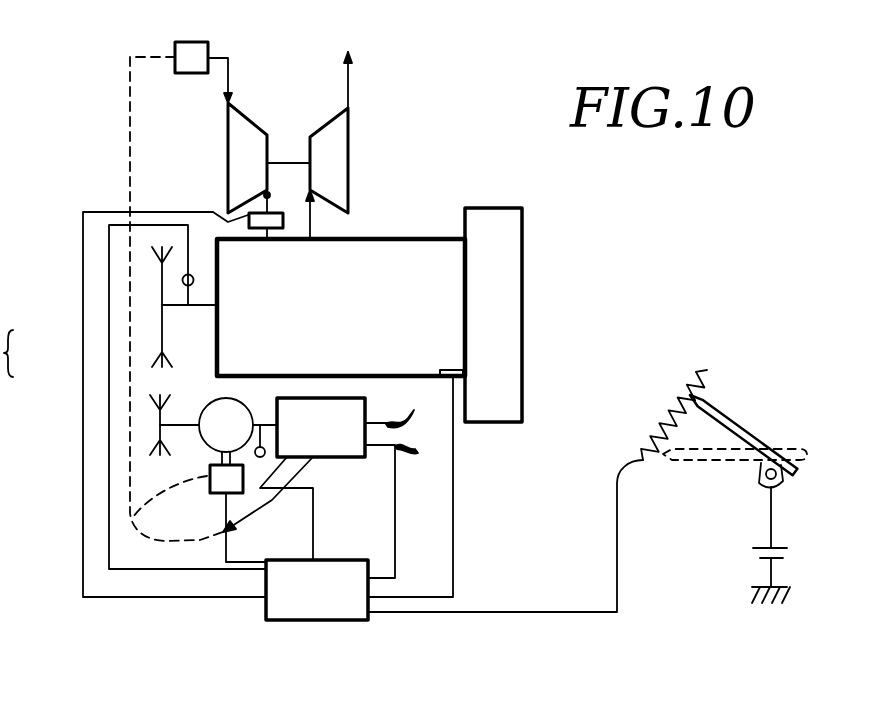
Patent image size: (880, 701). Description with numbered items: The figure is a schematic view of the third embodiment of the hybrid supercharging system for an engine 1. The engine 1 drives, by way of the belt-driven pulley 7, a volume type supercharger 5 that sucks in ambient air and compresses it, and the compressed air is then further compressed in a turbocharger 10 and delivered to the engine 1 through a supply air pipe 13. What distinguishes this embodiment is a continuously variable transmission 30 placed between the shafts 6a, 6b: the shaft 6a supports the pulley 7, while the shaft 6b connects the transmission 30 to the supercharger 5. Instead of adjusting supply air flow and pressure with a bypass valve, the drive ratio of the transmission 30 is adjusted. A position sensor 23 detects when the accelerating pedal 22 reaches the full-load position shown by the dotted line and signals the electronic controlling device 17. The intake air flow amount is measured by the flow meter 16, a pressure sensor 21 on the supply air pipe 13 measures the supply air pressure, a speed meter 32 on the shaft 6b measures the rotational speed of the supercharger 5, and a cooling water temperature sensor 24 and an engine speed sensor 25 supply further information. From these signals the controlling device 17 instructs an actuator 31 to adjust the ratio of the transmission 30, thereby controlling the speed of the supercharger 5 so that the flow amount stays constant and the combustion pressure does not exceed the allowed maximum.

The engine 1 is at (420, 260).
The supercharger 5 is at (340, 452).
The shaft 6a is at (183, 423).
The shaft 6b is at (262, 427).
The pulley 7 is at (157, 428).
The turbocharger 10 is at (212, 130).
The supply air pipe 13 is at (267, 237).
The flow meter 16 is at (400, 450).
The electronic controlling device 17 is at (318, 612).
The pressure sensor 21 is at (267, 195).
The accelerating pedal 22 is at (748, 428).
The position sensor 23 is at (708, 372).
The cooling water temperature sensor 24 is at (450, 368).
The engine speed sensor 25 is at (183, 280).
The continuously variable transmission 30 is at (210, 440).
The actuator 31 is at (207, 476).
The speed meter 32 is at (258, 458).